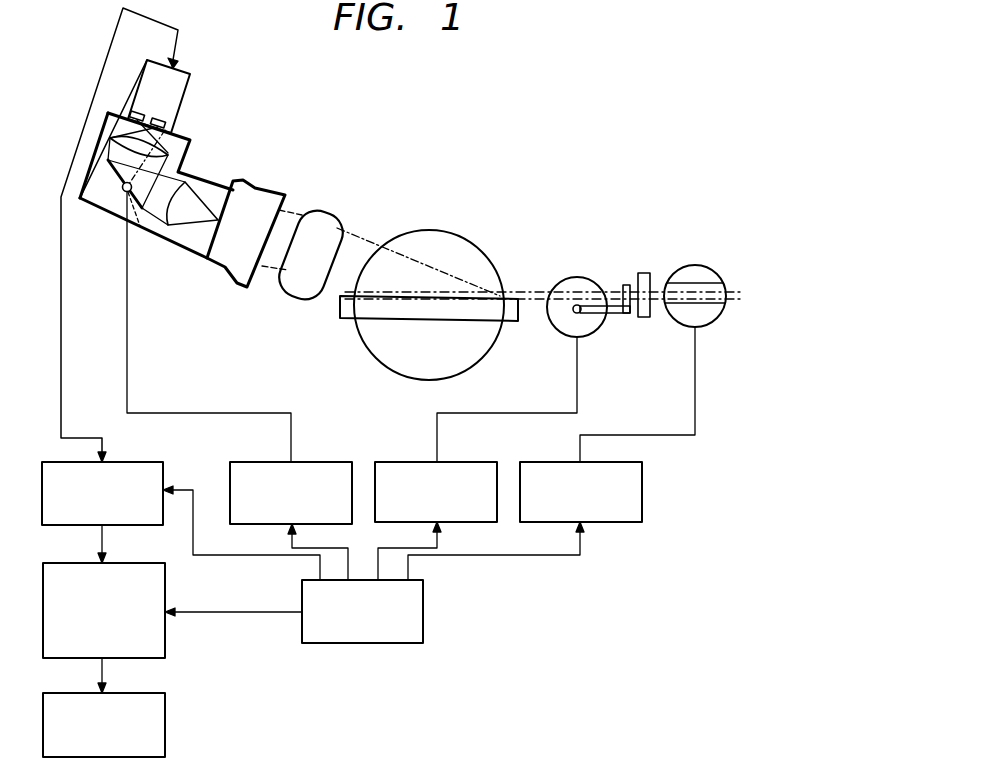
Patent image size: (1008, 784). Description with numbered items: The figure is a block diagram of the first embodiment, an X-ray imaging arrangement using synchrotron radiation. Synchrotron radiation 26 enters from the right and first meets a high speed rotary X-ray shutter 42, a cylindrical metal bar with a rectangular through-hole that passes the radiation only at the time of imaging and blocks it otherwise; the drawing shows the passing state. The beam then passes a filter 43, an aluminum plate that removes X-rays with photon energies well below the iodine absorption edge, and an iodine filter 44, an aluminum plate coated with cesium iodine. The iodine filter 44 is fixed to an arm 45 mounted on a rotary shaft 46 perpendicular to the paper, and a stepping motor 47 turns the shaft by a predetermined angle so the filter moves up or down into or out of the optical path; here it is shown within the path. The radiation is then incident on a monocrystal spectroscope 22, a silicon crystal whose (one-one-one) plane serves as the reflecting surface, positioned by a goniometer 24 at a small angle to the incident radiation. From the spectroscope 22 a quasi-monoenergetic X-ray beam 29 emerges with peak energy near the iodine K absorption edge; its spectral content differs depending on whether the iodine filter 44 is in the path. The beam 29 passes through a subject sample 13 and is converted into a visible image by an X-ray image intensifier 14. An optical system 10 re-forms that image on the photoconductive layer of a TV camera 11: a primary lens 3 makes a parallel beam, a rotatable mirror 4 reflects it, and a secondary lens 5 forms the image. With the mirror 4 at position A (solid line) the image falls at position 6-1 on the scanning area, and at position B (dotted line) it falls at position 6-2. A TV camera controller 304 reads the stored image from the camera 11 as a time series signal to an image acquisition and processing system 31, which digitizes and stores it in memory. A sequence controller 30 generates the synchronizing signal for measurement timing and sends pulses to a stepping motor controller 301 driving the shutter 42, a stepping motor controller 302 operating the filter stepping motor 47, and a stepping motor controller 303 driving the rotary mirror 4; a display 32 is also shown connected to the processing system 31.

The primary lens 3 is at (183, 185).
The mirror 4 is at (115, 177).
The secondary lens 5 is at (183, 141).
The image position 6-1 is at (135, 111).
The image position 6-2 is at (167, 118).
The optical system 10 is at (185, 252).
The TV camera 11 is at (174, 78).
The subject sample 13 is at (327, 214).
The X-ray image intensifier 14 is at (273, 189).
The monocrystal spectroscope 22 is at (346, 313).
The goniometer 24 is at (465, 249).
The synchrotron radiation 26 is at (738, 291).
The X-ray beam 29 is at (362, 247).
The sequence controller 30 is at (423, 608).
The image acquisition and processing system 31 is at (165, 588).
The display 32 is at (168, 715).
The high speed rotary X-ray shutter 42 is at (695, 265).
The filter 43 is at (645, 273).
The iodine filter 44 is at (626, 286).
The arm 45 is at (617, 316).
The rotary shaft 46 is at (574, 313).
The stepping motor 47 is at (573, 282).
The stepping motor controller 301 is at (642, 482).
The stepping motor controller 302 is at (497, 478).
The stepping motor controller 303 is at (353, 475).
The TV camera controller 304 is at (196, 452).
The mirror position A is at (141, 205).
The mirror position B is at (137, 233).